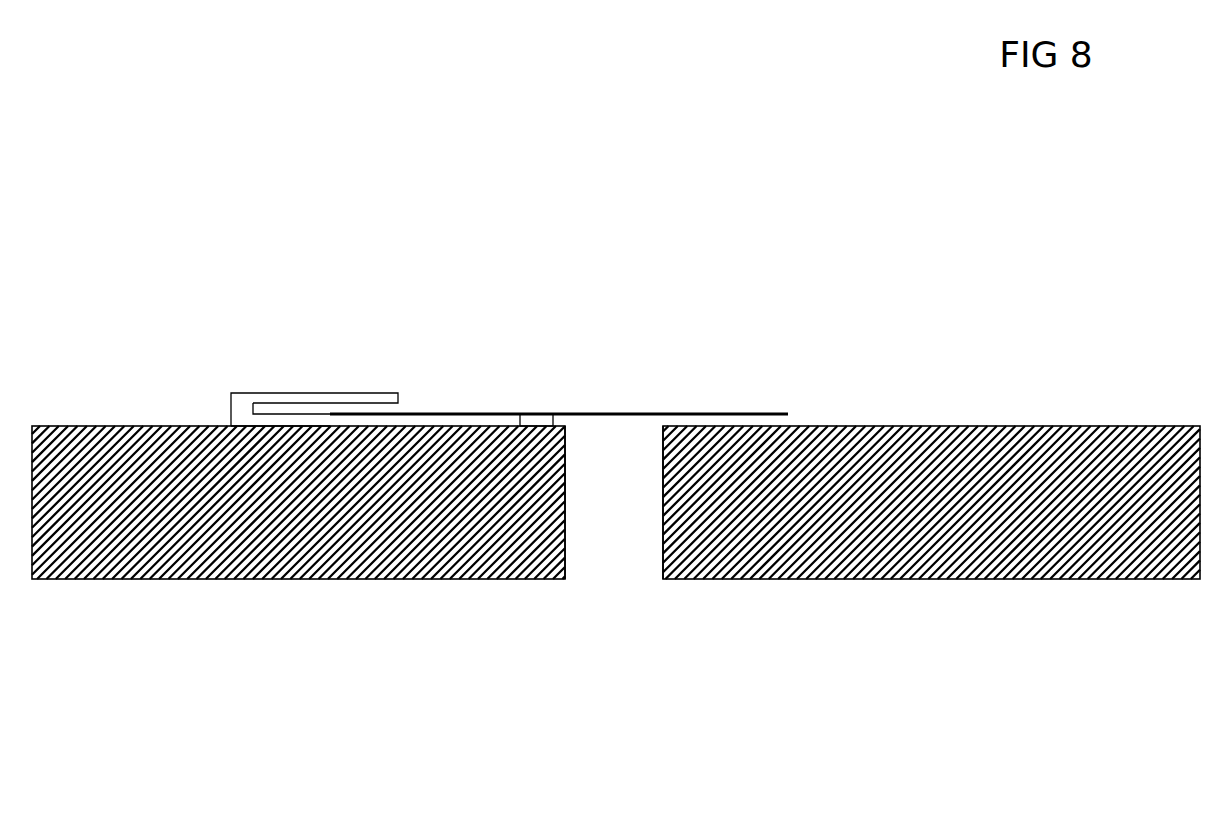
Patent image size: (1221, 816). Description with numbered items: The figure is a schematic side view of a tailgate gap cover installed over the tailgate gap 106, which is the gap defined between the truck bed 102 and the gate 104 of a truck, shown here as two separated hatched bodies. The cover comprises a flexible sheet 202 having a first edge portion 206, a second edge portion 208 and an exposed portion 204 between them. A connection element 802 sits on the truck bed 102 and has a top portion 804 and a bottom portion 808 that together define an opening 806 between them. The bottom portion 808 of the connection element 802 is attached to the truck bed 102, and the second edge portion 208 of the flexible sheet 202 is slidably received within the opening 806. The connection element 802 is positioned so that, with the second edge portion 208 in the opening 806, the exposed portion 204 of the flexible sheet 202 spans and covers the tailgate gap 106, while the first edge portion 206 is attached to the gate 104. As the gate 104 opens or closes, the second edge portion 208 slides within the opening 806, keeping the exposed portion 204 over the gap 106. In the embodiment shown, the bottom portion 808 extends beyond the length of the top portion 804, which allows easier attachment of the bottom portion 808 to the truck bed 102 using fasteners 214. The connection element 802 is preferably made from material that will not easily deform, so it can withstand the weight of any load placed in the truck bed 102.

The truck bed 102 is at (377, 555).
The gate 104 is at (930, 530).
The tailgate gap 106 is at (607, 505).
The flexible sheet 202 is at (584, 331).
The exposed portion 204 is at (620, 413).
The first edge portion 206 is at (745, 413).
The second edge portion 208 is at (430, 413).
The fasteners 214 is at (520, 414).
The connection element 802 is at (249, 315).
The top portion 804 is at (363, 392).
The opening 806 is at (262, 404).
The bottom portion 808 is at (283, 425).